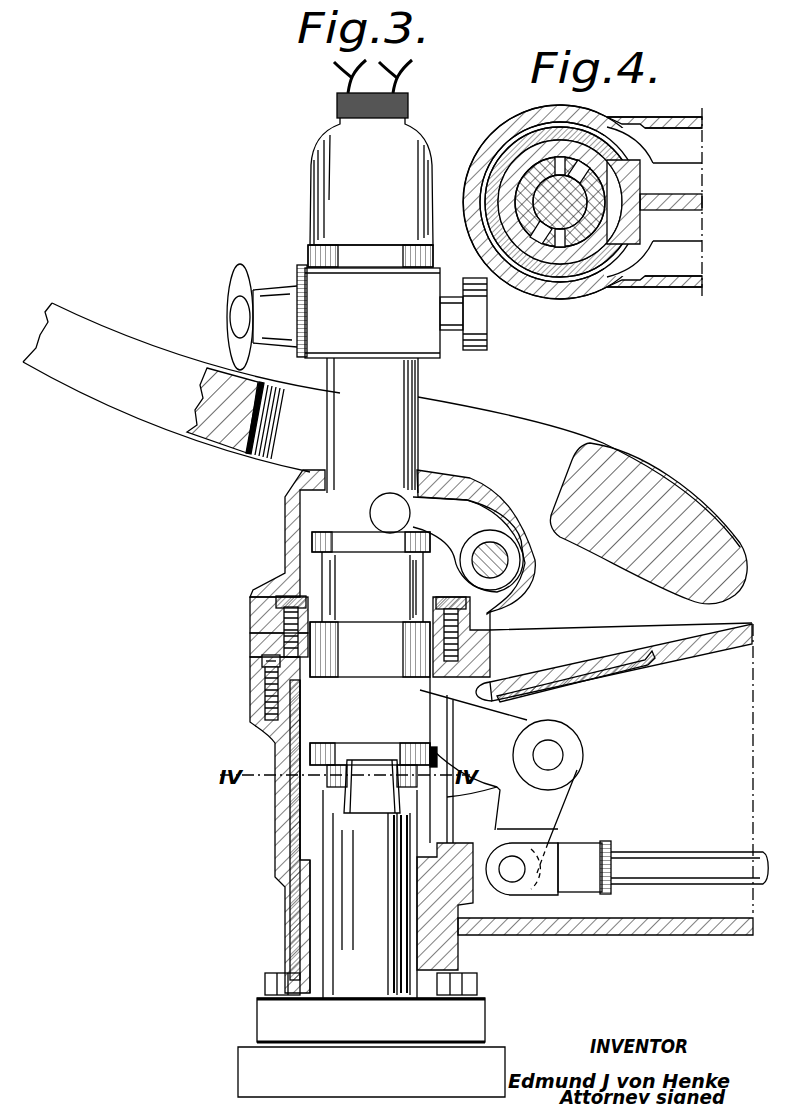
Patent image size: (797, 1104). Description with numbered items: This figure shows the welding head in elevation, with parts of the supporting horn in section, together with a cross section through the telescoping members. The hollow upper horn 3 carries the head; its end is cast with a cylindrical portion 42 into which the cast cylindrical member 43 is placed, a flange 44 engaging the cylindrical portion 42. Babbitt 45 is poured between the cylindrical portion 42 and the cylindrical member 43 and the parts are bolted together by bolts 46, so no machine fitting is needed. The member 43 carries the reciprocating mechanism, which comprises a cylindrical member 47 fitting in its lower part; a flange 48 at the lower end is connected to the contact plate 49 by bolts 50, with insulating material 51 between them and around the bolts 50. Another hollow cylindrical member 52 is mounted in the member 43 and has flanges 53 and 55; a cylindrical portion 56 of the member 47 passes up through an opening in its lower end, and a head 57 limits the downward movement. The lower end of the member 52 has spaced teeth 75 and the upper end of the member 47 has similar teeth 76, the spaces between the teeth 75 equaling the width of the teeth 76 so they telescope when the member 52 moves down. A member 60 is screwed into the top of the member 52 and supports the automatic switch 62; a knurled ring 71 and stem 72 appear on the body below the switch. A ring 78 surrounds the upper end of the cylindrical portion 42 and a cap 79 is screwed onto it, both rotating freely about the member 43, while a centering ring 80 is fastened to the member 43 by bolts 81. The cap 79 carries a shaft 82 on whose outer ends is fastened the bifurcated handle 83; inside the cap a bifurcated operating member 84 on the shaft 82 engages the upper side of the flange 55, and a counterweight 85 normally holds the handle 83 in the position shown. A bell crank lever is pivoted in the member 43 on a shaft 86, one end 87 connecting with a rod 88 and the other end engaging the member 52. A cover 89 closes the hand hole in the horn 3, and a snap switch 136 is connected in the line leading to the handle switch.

In FIG. 3, the upper horn 3 is at (718, 948).
In FIG. 4, the upper horn 3 is at (680, 120).
In FIG. 3, the cylindrical portion 42 is at (275, 747).
In FIG. 3, the cylindrical member 43 is at (290, 809).
In FIG. 4, the cylindrical member 43 is at (504, 141).
In FIG. 3, the flange 44 is at (262, 663).
In FIG. 3, the babbitt 45 is at (288, 832).
In FIG. 4, the babbitt 45 is at (495, 156).
In FIG. 3, the bolts 46 is at (266, 696).
In FIG. 3, the cylindrical member 47 is at (345, 901).
In FIG. 3, the flange 48 is at (265, 1020).
In FIG. 3, the contact plate 49 is at (371, 1072).
In FIG. 3, the bolts 50 is at (265, 982).
In FIG. 3, the insulating material 51 is at (488, 1044).
In FIG. 3, the cylindrical member 52 is at (372, 587).
In FIG. 3, the flange 53 is at (373, 755).
In FIG. 3, the flange 55 is at (312, 541).
In FIG. 3, the cylindrical portion 56 is at (452, 800).
In FIG. 4, the cylindrical portion 56 is at (573, 190).
In FIG. 3, the head 57 is at (370, 649).
In FIG. 3, the member 60 is at (418, 374).
In FIG. 3, the automatic switch 62 is at (353, 181).
In FIG. 3, the knurled ring 71 is at (298, 281).
In FIG. 3, the handle 72 is at (237, 313).
In FIG. 3, the teeth 75 is at (379, 789).
In FIG. 4, the teeth 75 is at (522, 228).
In FIG. 3, the teeth 76 is at (372, 786).
In FIG. 4, the teeth 76 is at (557, 163).
In FIG. 3, the ring 78 is at (250, 642).
In FIG. 3, the cap 79 is at (290, 563).
In FIG. 4, the cap 79 is at (512, 124).
In FIG. 3, the centering ring 80 is at (276, 600).
In FIG. 3, the bolts 81 is at (252, 615).
In FIG. 3, the shaft 82 is at (508, 560).
In FIG. 3, the bifurcated handle 83 is at (100, 383).
In FIG. 3, the bifurcated operating member 84 is at (446, 542).
In FIG. 3, the counterweight 85 is at (655, 492).
In FIG. 3, the shaft 86 is at (557, 755).
In FIG. 3, the end of bell crank 87 is at (546, 822).
In FIG. 3, the rod 88 is at (683, 862).
In FIG. 3, the cover 89 is at (612, 661).
In FIG. 3, the snap switch 136 is at (480, 340).